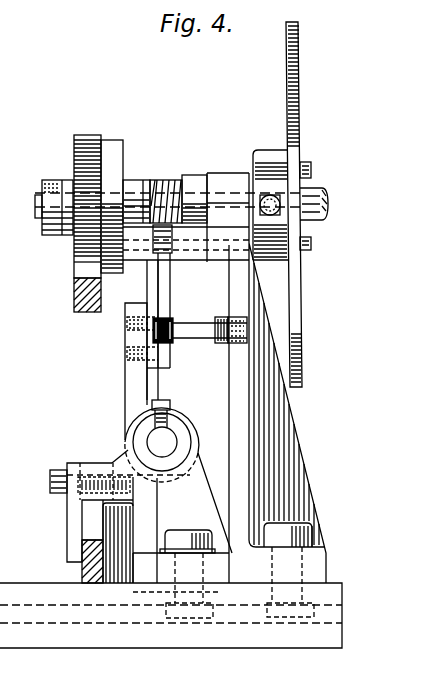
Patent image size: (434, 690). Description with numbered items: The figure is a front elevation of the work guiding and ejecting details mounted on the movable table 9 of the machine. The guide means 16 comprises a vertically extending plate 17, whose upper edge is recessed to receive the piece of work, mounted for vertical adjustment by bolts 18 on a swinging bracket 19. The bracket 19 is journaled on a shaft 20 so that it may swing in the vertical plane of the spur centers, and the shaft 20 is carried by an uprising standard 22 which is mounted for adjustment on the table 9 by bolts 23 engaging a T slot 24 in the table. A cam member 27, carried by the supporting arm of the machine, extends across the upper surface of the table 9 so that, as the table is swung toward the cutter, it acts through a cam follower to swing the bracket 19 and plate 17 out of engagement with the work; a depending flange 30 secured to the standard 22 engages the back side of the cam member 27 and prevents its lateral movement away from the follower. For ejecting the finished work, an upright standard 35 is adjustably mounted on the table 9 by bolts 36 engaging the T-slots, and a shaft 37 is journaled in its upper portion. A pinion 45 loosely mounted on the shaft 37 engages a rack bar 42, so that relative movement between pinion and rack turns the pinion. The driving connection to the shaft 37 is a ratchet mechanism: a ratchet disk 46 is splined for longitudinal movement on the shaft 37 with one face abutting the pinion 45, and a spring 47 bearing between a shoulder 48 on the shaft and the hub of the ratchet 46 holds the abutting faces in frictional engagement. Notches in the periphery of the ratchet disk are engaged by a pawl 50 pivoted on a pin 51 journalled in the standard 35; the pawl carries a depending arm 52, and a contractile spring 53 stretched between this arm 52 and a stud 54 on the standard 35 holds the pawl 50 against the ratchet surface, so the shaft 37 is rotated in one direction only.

The table 9 is at (29, 583).
The guide means 16 is at (113, 432).
The plate 17 is at (152, 290).
The bolts 18 is at (125, 352).
The swinging bracket 19 is at (133, 382).
The shaft 20 is at (166, 442).
The uprising standard 22 is at (190, 476).
The bolts 23 is at (183, 530).
The T slot 24 is at (145, 615).
The cam member 27 is at (89, 583).
The depending flange 30 is at (72, 521).
The upright standard 35 is at (243, 413).
The bolts 36 is at (285, 523).
The shaft 37 is at (317, 190).
The rack bar 42 is at (84, 313).
The pinion 45 is at (87, 135).
The ratchet disk 46 is at (120, 142).
The spring 47 is at (162, 182).
The shoulder 48 is at (196, 176).
The pawl 50 is at (78, 262).
The pin 51 is at (212, 256).
The depending arm 52 is at (164, 293).
The contractile spring 53 is at (172, 344).
The stud 54 is at (204, 344).